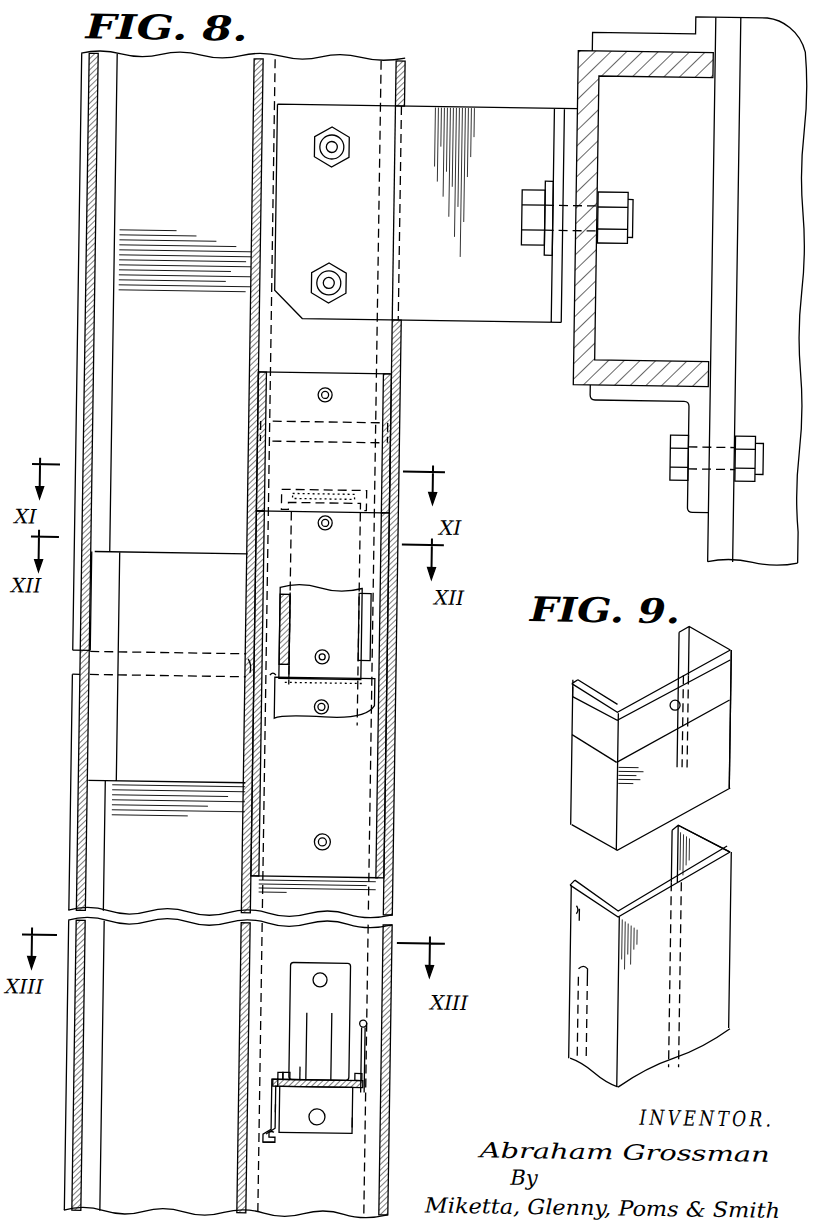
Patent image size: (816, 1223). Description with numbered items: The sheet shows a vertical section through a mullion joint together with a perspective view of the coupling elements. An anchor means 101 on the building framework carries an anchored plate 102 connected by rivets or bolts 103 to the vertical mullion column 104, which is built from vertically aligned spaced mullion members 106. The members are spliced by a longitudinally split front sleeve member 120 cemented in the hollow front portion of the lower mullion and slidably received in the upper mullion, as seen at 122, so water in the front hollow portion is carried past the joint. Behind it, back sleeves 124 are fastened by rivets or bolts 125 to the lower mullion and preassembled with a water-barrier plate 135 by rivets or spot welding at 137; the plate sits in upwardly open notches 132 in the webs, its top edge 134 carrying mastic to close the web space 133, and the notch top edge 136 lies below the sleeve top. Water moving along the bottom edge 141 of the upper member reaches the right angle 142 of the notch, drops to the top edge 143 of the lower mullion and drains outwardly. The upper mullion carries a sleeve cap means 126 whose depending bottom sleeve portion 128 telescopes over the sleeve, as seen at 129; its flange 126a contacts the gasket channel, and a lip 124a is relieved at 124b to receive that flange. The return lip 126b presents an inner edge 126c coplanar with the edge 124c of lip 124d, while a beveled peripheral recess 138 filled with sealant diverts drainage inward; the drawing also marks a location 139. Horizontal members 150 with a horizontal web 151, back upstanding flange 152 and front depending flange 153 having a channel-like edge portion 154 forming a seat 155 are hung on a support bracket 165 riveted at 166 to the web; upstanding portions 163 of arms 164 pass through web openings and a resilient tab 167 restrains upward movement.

In FIG. 8, the anchor means 101 is at (574, 80).
In FIG. 8, the anchored plate 102 is at (482, 121).
In FIG. 8, the rivets or bolts 103 is at (334, 143).
In FIG. 8, the vertical mullion column 104 is at (409, 72).
In FIG. 8, the mullion member 106 is at (93, 324).
In FIG. 8, the front sleeve member 120 is at (158, 565).
In FIG. 8, the sliding reception of sleeve in upper mullion 122 is at (97, 621).
In FIG. 8, the back sleeve 124 is at (395, 614).
In FIG. 9, the back sleeve 124 is at (644, 955).
In FIG. 9, the lip of sleeve 124a is at (605, 1013).
In FIG. 9, the cut-out of lip 124b is at (591, 897).
In FIG. 9, the edge of lip 124c is at (685, 852).
In FIG. 9, the lip of sleeve 124d is at (693, 840).
In FIG. 8, the rivets or bolts 125 is at (341, 702).
In FIG. 8, the sleeve cap means 126 is at (406, 431).
In FIG. 9, the sleeve cap means 126 is at (653, 738).
In FIG. 9, the flange of sleeve cap 126a is at (596, 761).
In FIG. 9, the return lip 126b is at (700, 630).
In FIG. 9, the inner edge of return lip 126c is at (688, 638).
In FIG. 9, the depending bottom sleeve portion 128 is at (723, 749).
In FIG. 8, the telescopic relation 129 is at (404, 460).
In FIG. 8, the notch 132 is at (380, 645).
In FIG. 8, the web space 133 is at (299, 607).
In FIG. 8, the top edge of barrier plate 134 is at (330, 495).
In FIG. 8, the water-barrier plate 135 is at (350, 673).
In FIG. 8, the top edge of notch 136 is at (302, 485).
In FIG. 8, the rivets or spot welds 137 is at (333, 520).
In FIG. 8, the peripheral recess 138 is at (401, 367).
In FIG. 9, the peripheral recess 138 is at (582, 684).
In FIG. 8, the plate edge 139 is at (263, 371).
In FIG. 8, the bottom edge of upper mullion member 141 is at (260, 662).
In FIG. 8, the right angle of notch 142 is at (310, 655).
In FIG. 8, the top edge of lower mullion 143 is at (280, 671).
In FIG. 8, the horizontal member 150 is at (384, 1086).
In FIG. 8, the horizontal web 151 is at (309, 1089).
In FIG. 8, the back upstanding flange 152 is at (386, 1041).
In FIG. 8, the front depending flange 153 is at (286, 1089).
In FIG. 8, the channel-like edge portion 154 is at (279, 1131).
In FIG. 8, the seat 155 is at (279, 1114).
In FIG. 8, the upstanding portions of arms 163 is at (388, 1076).
In FIG. 8, the sidewardly extending arms 164 is at (372, 1115).
In FIG. 8, the support bracket 165 is at (347, 995).
In FIG. 8, the rivets 166 is at (335, 969).
In FIG. 8, the resilient tab 167 is at (316, 1063).